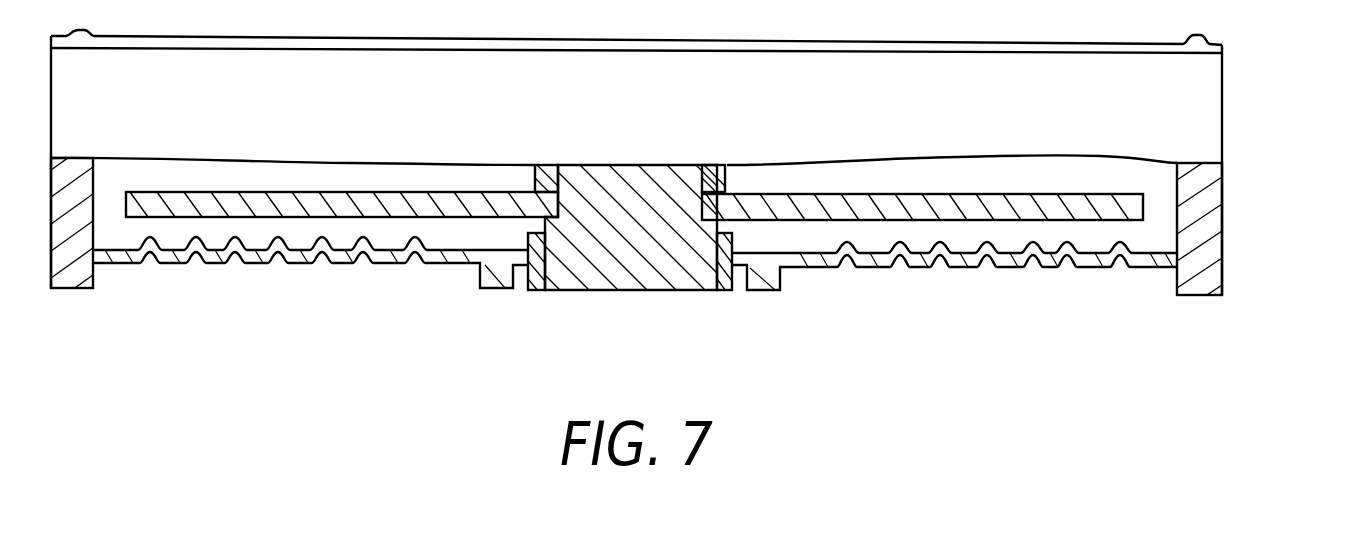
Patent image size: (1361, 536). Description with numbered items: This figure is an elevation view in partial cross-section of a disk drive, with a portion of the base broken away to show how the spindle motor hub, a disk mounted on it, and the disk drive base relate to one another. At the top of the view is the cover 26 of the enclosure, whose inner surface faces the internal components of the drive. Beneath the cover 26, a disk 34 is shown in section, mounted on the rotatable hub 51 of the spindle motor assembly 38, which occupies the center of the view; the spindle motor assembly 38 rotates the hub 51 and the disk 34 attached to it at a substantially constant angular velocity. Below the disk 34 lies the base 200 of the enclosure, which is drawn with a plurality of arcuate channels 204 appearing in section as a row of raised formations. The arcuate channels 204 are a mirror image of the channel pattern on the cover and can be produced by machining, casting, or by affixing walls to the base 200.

The cover 26 is at (1222, 45).
The disk 34 is at (1143, 210).
The rotatable hub 51 is at (630, 260).
The spindle motor assembly 38 is at (732, 290).
The base 200 is at (719, 301).
The arcuate channels 204 is at (350, 263).